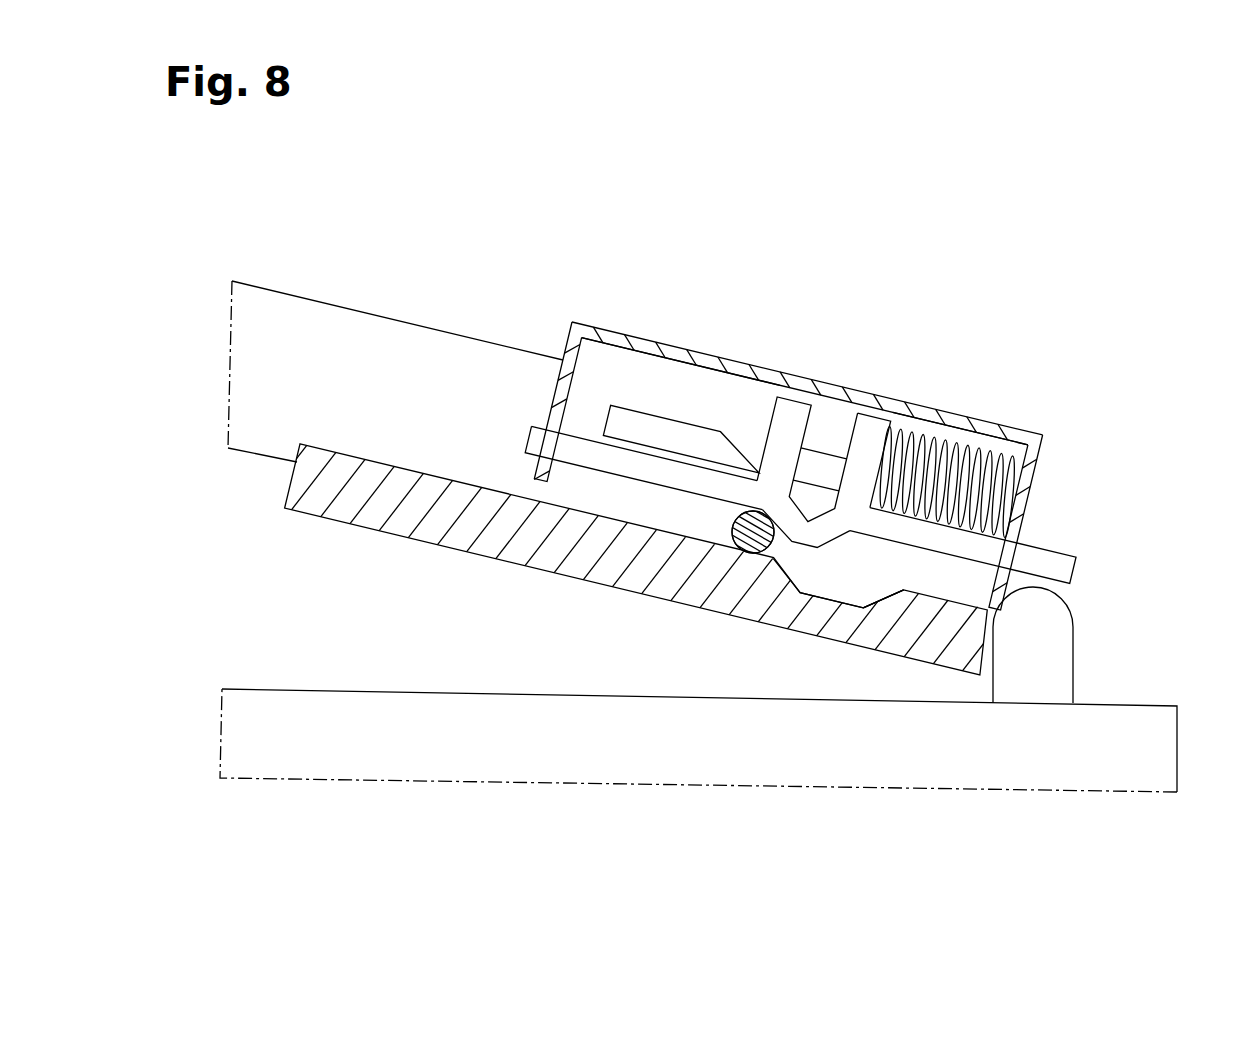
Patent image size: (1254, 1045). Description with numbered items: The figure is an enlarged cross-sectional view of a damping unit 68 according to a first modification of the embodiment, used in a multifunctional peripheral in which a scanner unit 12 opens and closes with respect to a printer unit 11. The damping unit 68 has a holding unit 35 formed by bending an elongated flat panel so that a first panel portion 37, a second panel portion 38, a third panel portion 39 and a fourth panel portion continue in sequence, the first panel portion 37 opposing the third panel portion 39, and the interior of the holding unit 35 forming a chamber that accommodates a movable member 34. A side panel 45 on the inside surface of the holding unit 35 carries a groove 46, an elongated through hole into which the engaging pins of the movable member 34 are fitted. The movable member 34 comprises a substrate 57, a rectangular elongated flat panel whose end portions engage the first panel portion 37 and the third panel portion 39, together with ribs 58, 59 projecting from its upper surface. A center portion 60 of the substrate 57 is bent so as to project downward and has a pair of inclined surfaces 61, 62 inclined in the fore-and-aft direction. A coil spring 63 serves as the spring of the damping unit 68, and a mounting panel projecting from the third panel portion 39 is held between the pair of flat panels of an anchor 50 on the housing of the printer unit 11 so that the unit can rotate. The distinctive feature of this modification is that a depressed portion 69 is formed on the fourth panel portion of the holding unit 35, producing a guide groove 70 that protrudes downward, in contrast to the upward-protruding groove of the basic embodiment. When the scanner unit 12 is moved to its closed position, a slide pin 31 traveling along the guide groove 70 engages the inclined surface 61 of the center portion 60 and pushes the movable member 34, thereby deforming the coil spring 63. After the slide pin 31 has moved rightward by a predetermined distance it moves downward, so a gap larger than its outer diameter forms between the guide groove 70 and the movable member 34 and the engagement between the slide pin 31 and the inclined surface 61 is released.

The printer unit 11 is at (264, 678).
The scanner unit 12 is at (281, 284).
The slide pin 31 is at (735, 521).
The movable member 34 is at (1114, 569).
The holding unit 35 is at (556, 306).
The first panel portion 37 is at (552, 398).
The second panel portion 38 is at (748, 372).
The third panel portion 39 is at (1042, 452).
The side panel 45 is at (605, 365).
The groove 46 is at (670, 428).
The anchor 50 is at (1053, 652).
The substrate 57 is at (1058, 527).
The rib 58 is at (800, 393).
The rib 59 is at (880, 425).
The center portion 60 is at (840, 580).
The inclined surface 61 is at (750, 555).
The inclined surface 62 is at (843, 533).
The coil spring 63 is at (940, 428).
The damping unit 68 is at (1017, 244).
The depressed portion 69 is at (863, 593).
The guide groove 70 is at (590, 492).